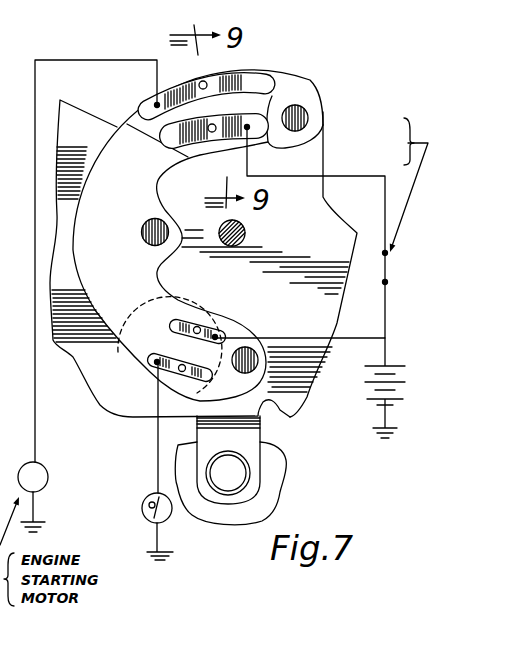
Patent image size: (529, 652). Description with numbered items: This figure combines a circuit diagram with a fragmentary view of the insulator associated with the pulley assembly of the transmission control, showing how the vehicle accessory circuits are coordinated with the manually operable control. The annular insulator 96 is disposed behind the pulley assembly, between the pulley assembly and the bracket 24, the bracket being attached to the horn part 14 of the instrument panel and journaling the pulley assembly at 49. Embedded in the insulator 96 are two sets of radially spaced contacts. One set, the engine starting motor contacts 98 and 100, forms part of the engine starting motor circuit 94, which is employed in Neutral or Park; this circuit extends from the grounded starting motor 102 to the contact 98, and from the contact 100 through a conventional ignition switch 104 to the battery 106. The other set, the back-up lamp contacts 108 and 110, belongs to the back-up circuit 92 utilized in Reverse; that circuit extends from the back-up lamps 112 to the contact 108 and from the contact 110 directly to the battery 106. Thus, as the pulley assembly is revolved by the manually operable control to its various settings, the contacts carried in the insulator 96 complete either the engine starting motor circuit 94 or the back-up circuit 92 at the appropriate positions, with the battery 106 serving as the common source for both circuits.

The horn part 14 is at (283, 495).
The bracket 24 is at (311, 403).
The pulley journal 49 is at (246, 234).
The back-up circuit 92 is at (154, 455).
The engine starting motor circuit 94 is at (42, 388).
The annular insulator 96 is at (125, 93).
The engine starting motor contact 98 is at (258, 80).
The engine starting motor contact 100 is at (253, 132).
The starting motor 102 is at (48, 474).
The ignition switch 104 is at (388, 262).
The battery 106 is at (365, 399).
The back-up lamp contact 108 is at (153, 360).
The back-up lamp contact 110 is at (217, 336).
The back-up lamps 112 is at (144, 519).